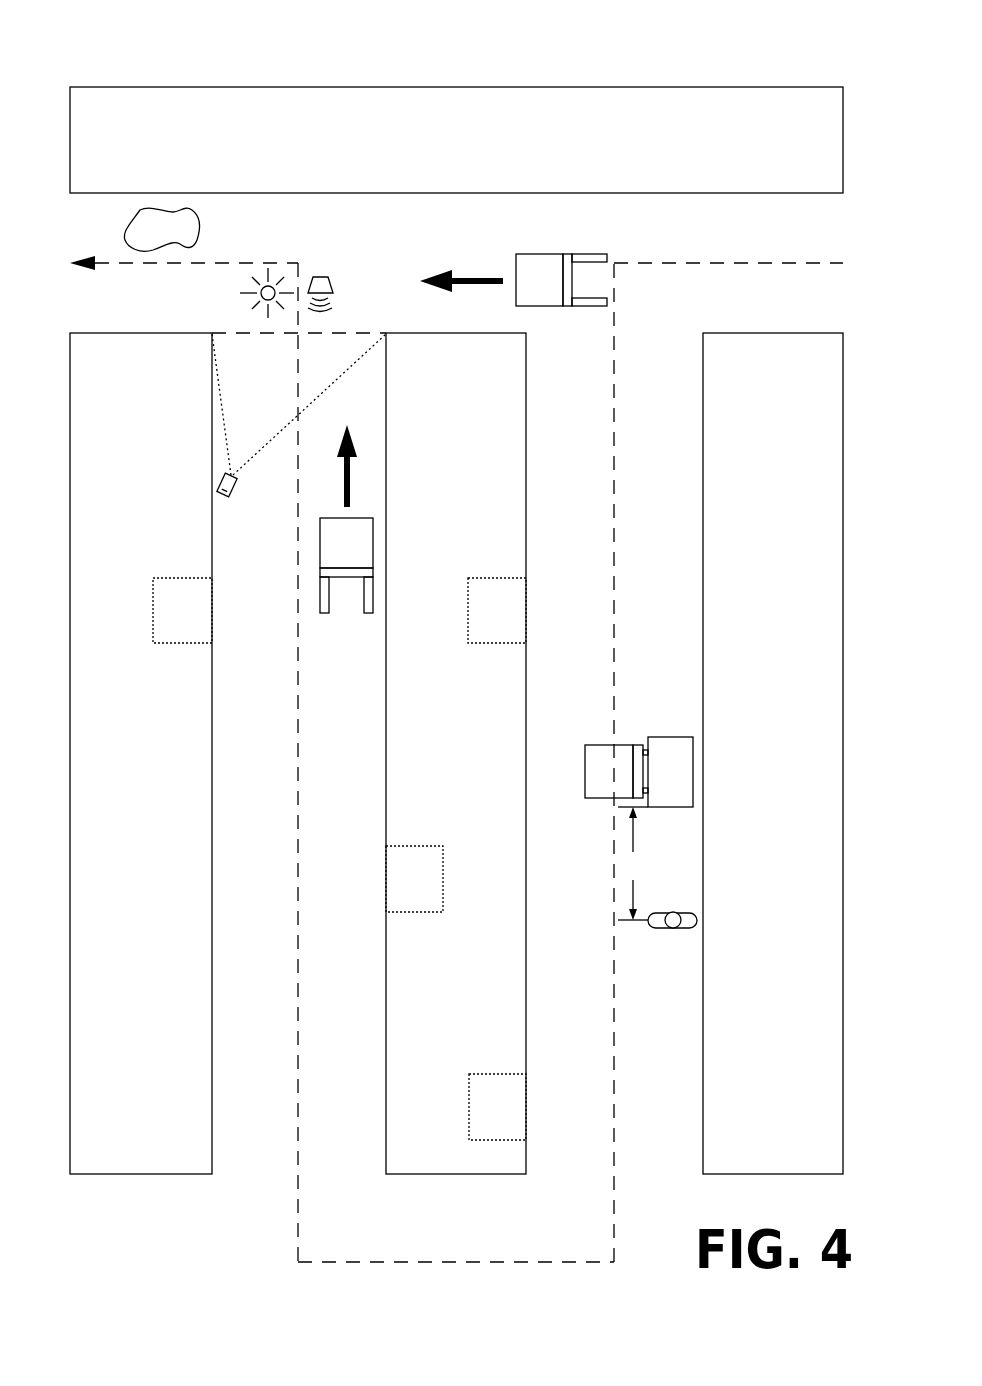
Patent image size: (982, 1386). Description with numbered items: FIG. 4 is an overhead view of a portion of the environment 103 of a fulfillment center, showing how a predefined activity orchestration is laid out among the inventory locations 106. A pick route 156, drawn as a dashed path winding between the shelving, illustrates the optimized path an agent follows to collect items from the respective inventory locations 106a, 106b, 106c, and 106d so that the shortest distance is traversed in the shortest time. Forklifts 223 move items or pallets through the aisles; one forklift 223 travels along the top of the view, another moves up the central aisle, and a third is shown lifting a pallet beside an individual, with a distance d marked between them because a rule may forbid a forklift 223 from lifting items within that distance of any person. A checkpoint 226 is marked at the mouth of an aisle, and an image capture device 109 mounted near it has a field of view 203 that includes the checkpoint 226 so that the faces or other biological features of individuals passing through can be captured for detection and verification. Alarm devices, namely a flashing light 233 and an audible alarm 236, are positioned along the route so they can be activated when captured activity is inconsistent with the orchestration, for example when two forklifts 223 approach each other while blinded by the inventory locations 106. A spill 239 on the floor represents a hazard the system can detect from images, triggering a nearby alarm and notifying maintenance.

The environment 103 is at (830, 65).
The inventory locations 106 is at (440, 151).
The inventory location 106a is at (497, 610).
The inventory location 106b is at (497, 1107).
The inventory location 106c is at (414, 879).
The inventory location 106d is at (182, 610).
The image capture device 109 is at (224, 497).
The pick route 156 is at (723, 262).
The field of view 203 is at (342, 372).
The forklift 223 is at (527, 254).
The checkpoint 226 is at (352, 331).
The flashing light 233 is at (259, 293).
The audible alarm 236 is at (330, 285).
The spill 239 is at (180, 230).
The distance d is at (657, 867).